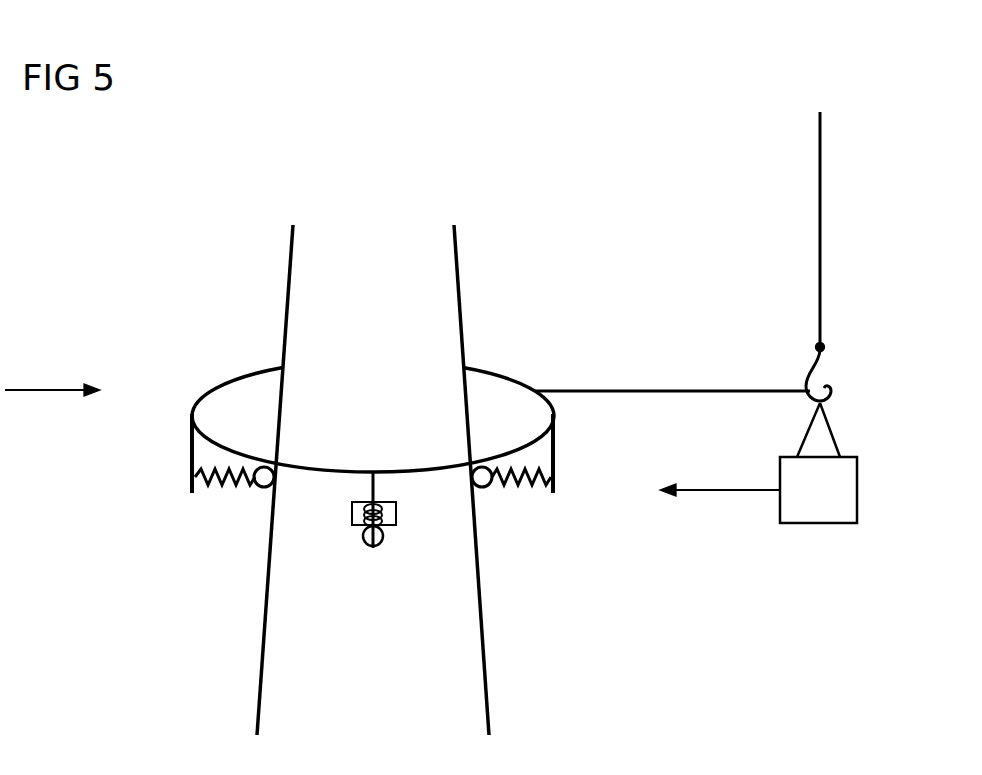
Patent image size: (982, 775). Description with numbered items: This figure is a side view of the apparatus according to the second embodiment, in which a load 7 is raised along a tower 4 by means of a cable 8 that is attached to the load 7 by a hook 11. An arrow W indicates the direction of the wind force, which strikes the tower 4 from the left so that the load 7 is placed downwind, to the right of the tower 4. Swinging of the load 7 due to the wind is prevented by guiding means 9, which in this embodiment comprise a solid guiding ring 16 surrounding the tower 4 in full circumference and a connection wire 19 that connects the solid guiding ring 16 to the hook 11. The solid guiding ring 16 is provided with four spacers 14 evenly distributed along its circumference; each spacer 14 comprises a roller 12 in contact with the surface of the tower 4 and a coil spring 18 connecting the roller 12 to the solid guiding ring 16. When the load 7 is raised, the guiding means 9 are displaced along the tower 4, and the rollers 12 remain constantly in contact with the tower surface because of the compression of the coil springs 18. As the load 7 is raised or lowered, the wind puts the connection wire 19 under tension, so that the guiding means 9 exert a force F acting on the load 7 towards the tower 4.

The tower 4 is at (288, 287).
The guiding means 9 is at (229, 382).
The solid guiding ring 16 is at (500, 372).
The spacer 14 is at (188, 458).
The coil spring 18 is at (211, 492).
The roller 12 is at (262, 492).
The connection wire 19 is at (670, 389).
The cable 8 is at (822, 262).
The hook 11 is at (822, 375).
The load 7 is at (859, 492).
The force F is at (722, 496).
The wind force direction arrow W is at (37, 388).